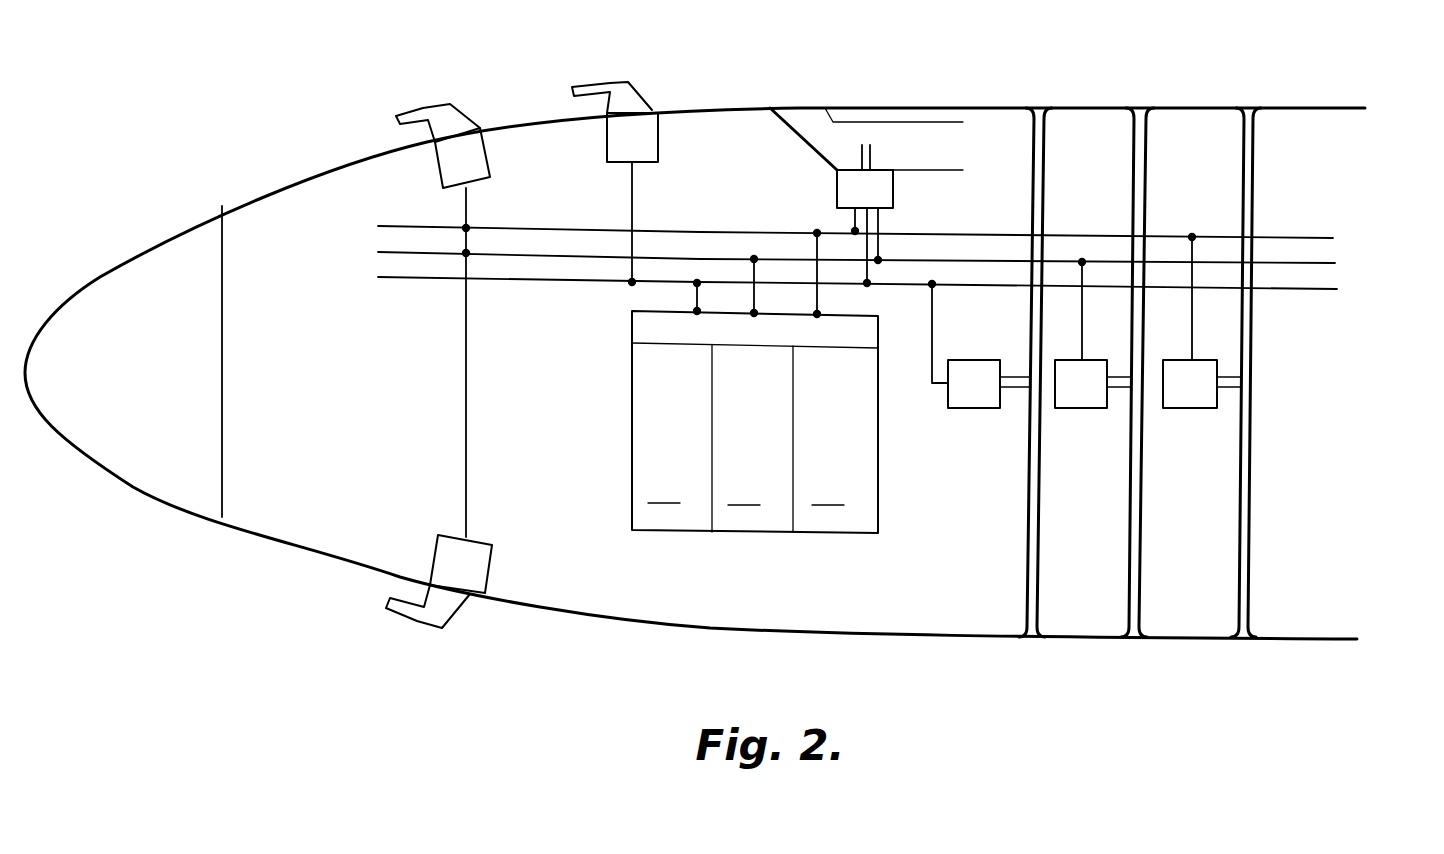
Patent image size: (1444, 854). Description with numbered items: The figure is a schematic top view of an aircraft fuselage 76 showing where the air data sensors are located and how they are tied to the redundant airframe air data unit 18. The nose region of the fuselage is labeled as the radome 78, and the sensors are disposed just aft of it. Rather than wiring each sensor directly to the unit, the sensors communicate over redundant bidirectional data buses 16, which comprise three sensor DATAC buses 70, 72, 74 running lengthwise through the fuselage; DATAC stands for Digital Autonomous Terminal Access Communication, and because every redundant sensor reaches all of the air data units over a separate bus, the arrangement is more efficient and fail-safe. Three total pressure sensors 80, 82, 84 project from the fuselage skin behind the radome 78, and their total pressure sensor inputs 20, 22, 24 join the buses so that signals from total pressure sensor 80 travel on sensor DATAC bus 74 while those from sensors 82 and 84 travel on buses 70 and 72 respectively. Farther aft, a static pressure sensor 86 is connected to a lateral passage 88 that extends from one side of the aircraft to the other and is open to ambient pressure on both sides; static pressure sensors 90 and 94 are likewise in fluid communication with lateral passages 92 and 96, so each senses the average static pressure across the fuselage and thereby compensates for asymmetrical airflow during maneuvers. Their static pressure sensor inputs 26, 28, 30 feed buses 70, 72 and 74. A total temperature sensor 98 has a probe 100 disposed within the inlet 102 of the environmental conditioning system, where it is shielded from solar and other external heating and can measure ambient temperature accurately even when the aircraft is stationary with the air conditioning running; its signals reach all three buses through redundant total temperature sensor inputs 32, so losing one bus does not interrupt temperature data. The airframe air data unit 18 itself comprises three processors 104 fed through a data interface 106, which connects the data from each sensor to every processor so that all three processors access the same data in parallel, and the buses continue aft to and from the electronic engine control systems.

The bidirectional data buses 16 is at (837, 254).
The airframe air data unit 18 is at (714, 382).
The total pressure sensor input 20 is at (472, 198).
The total pressure sensor input 22 is at (634, 200).
The total pressure sensor input 24 is at (467, 420).
The static pressure sensor input 26 is at (933, 330).
The static pressure sensor input 28 is at (1083, 335).
The static pressure sensor input 30 is at (1193, 338).
The total temperature sensor input 32 is at (852, 218).
The sensor DATAC bus 70 is at (498, 282).
The sensor DATAC bus 72 is at (581, 262).
The sensor DATAC bus 74 is at (563, 226).
The aircraft fuselage 76 is at (608, 622).
The radome 78 is at (103, 435).
The total pressure sensor 80 is at (418, 108).
The total pressure sensor 82 is at (602, 80).
The total pressure sensor 84 is at (425, 628).
The static pressure sensor 86 is at (965, 410).
The lateral passage 88 is at (1045, 183).
The static pressure sensor 90 is at (1085, 410).
The lateral passage 92 is at (1147, 182).
The static pressure sensor 94 is at (1190, 410).
The lateral passage 96 is at (1255, 175).
The total temperature sensor 98 is at (837, 180).
The probe 100 is at (873, 158).
The inlet 102 is at (815, 128).
The processor 104 is at (748, 492).
The data interface 106 is at (630, 330).